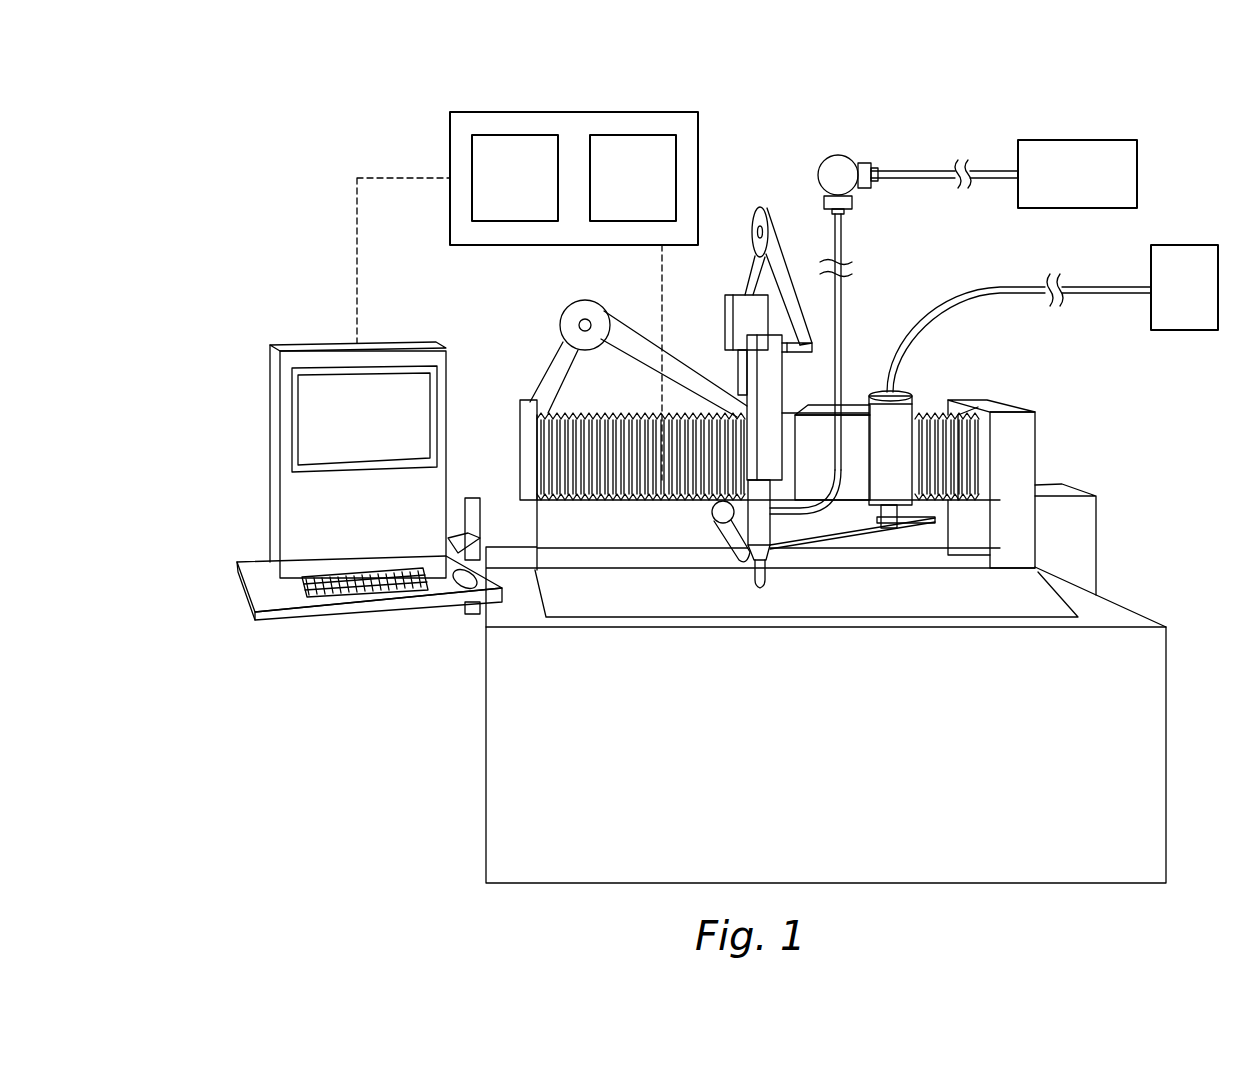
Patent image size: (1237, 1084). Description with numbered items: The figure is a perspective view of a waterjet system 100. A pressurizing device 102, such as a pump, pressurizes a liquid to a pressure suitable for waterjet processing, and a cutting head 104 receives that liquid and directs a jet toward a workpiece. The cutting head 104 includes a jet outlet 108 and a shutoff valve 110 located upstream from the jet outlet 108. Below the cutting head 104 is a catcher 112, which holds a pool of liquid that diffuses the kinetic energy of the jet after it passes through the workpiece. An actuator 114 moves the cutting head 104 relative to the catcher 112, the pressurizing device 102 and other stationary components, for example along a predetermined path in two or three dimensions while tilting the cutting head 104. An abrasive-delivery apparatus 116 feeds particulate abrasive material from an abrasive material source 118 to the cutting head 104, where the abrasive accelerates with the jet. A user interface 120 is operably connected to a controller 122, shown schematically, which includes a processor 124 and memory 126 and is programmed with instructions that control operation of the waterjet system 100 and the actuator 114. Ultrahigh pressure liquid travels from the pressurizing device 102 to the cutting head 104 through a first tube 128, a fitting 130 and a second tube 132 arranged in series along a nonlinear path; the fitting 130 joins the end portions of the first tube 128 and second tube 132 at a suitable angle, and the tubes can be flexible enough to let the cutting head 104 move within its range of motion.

The waterjet system 100 is at (303, 88).
The pressurizing device 102 is at (1057, 187).
The cutting head 104 is at (766, 460).
The jet outlet 108 is at (763, 596).
The shutoff valve 110 is at (716, 555).
The catcher 112 is at (487, 768).
The actuator 114 is at (772, 215).
The abrasive-delivery apparatus 116 is at (916, 372).
The abrasive material source 118 is at (1165, 296).
The user interface 120 is at (426, 343).
The controller 122 is at (686, 112).
The processor 124 is at (496, 189).
The memory 126 is at (614, 189).
The first tube 128 is at (918, 170).
The fitting 130 is at (826, 157).
The second tube 132 is at (843, 240).